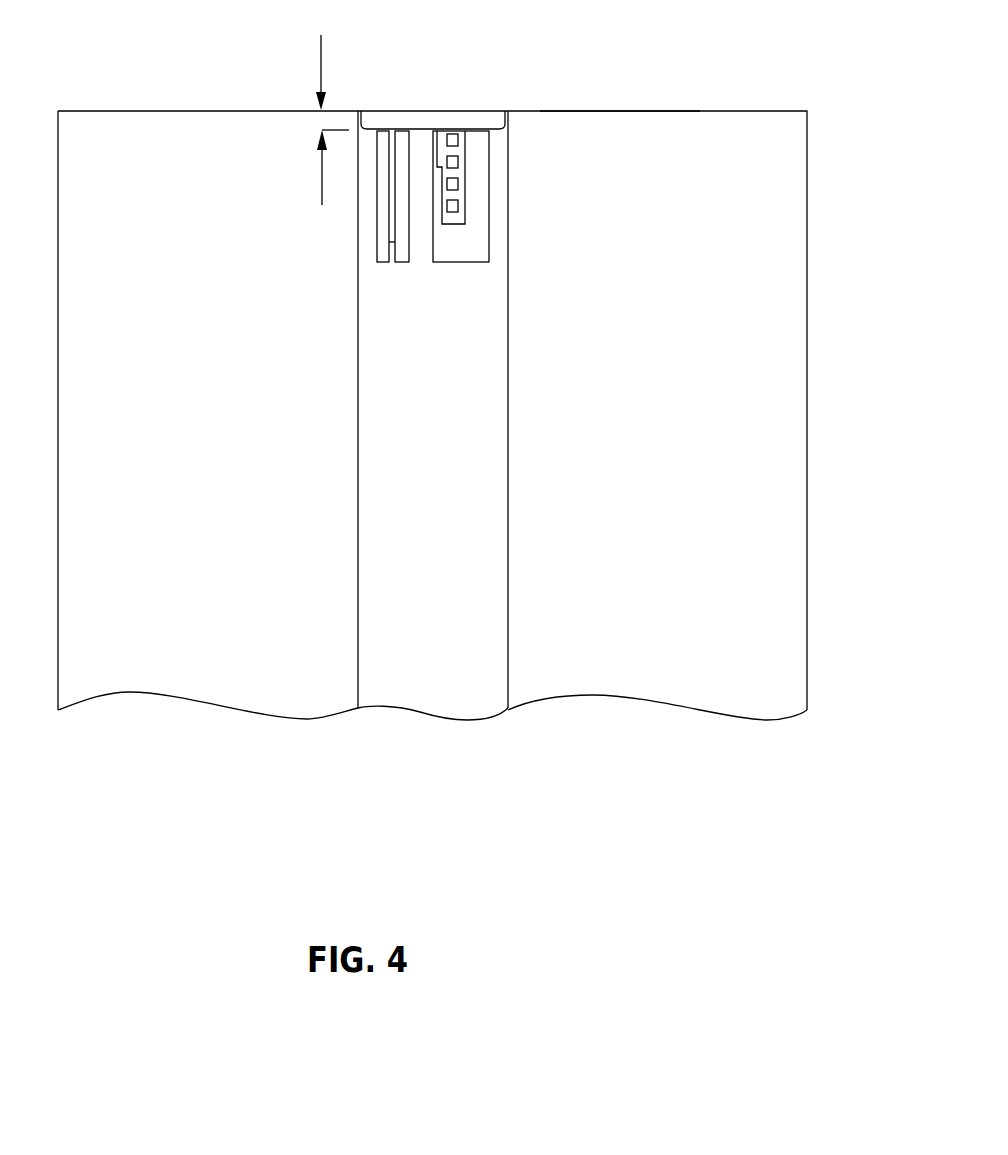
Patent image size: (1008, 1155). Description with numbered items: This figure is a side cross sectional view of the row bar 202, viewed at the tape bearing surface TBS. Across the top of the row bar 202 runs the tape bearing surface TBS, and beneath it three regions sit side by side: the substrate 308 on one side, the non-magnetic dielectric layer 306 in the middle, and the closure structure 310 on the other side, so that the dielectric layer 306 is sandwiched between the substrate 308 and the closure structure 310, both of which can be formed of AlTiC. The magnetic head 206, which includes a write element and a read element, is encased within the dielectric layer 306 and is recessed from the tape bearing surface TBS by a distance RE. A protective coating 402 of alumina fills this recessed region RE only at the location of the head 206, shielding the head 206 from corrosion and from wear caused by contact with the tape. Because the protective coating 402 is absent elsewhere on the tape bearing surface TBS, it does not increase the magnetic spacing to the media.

The row bar 202 is at (818, 160).
The magnetic head 206 is at (377, 264).
The non-magnetic dielectric layer 306 is at (465, 447).
The substrate 308 is at (253, 447).
The closure structure 310 is at (710, 447).
The protective coating 402 is at (438, 122).
The recess distance RE is at (320, 43).
The tape bearing surface TBS is at (675, 110).